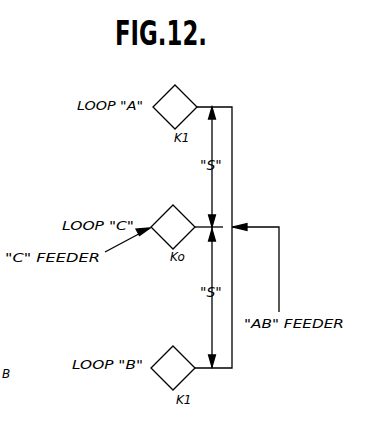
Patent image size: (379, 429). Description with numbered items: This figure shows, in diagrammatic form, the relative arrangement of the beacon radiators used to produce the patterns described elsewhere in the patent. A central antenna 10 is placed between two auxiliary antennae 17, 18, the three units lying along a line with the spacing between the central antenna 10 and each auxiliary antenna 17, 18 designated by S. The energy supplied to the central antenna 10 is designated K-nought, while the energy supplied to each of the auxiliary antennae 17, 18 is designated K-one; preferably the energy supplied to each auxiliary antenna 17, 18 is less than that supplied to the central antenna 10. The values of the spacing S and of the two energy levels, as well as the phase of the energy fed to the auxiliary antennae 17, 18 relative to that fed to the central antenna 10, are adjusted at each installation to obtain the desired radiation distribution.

The auxiliary antenna 18 is at (180, 99).
The central antenna 10 is at (165, 214).
The auxiliary antenna 17 is at (160, 372).